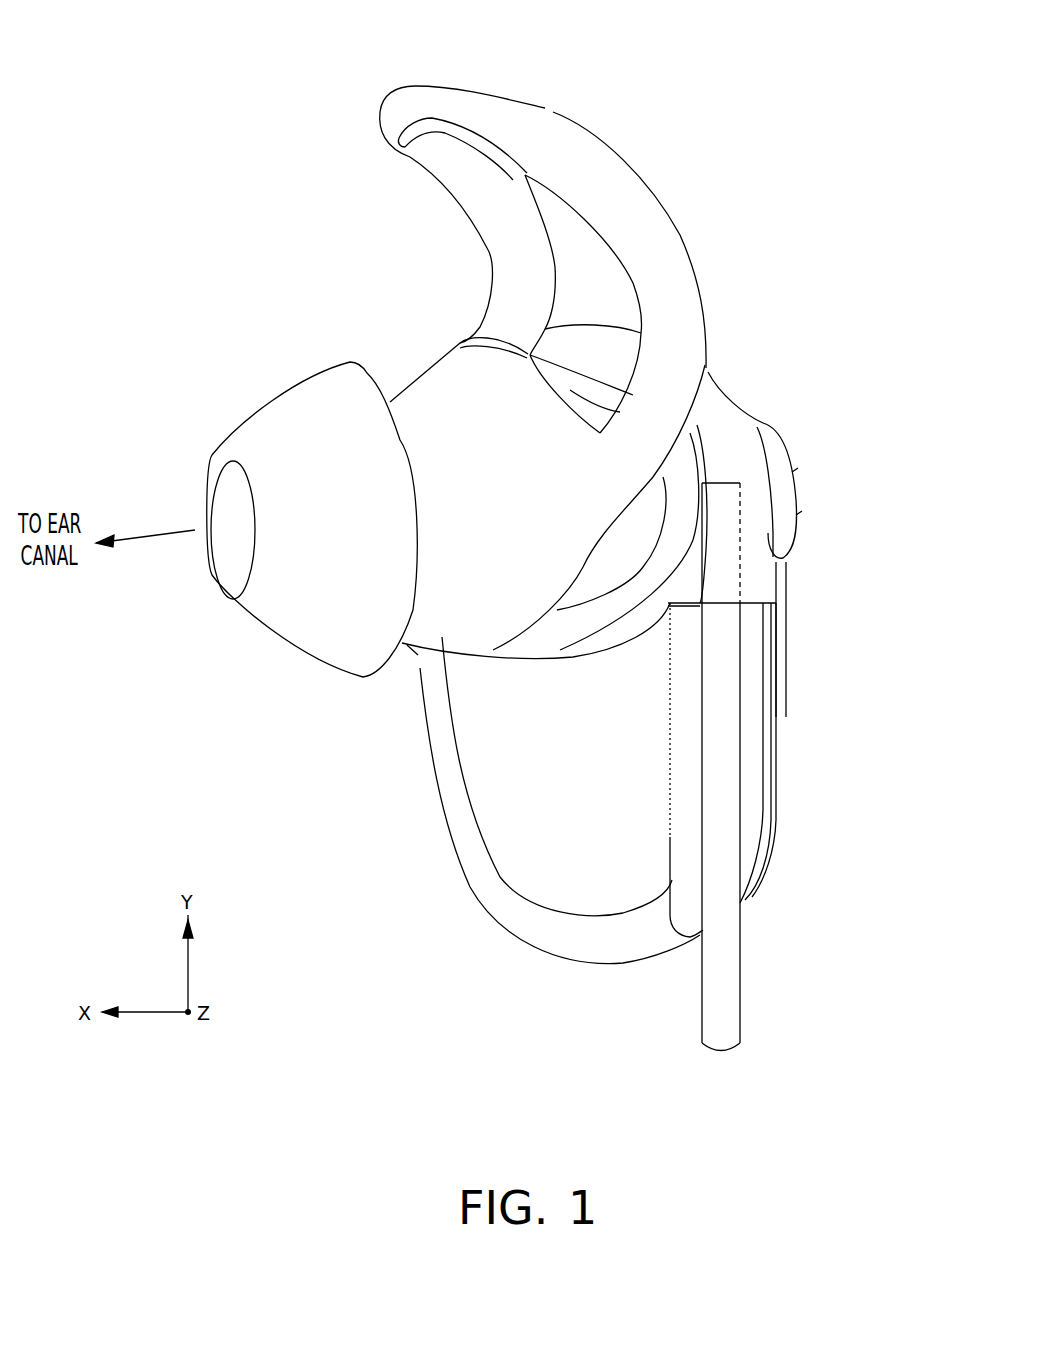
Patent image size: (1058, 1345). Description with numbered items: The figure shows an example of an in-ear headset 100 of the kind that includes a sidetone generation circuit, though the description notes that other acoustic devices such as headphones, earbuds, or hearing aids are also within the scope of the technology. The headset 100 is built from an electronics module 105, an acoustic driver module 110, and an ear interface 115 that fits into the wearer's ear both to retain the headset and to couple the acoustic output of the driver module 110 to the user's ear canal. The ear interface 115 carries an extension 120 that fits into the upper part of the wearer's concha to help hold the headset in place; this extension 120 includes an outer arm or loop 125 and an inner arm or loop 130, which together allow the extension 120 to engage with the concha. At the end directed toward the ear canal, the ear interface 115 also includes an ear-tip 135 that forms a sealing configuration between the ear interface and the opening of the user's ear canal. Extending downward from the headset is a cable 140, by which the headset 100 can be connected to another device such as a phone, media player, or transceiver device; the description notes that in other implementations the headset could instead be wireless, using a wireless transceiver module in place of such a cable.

The headset 100 is at (849, 113).
The electronics module 105 is at (719, 460).
The acoustic driver module 110 is at (627, 623).
The ear interface 115 is at (420, 668).
The extension 120 is at (411, 90).
The outer arm or loop 125 is at (704, 306).
The inner arm or loop 130 is at (492, 256).
The ear-tip 135 is at (270, 405).
The cable 140 is at (738, 978).